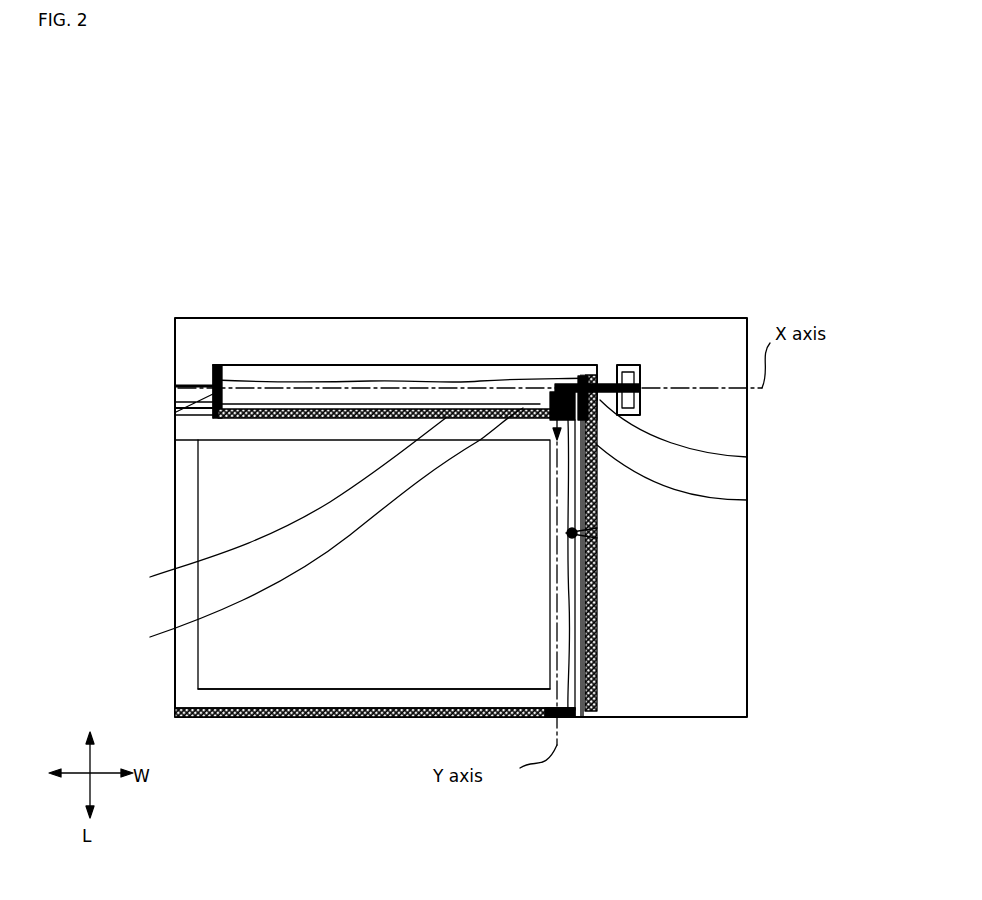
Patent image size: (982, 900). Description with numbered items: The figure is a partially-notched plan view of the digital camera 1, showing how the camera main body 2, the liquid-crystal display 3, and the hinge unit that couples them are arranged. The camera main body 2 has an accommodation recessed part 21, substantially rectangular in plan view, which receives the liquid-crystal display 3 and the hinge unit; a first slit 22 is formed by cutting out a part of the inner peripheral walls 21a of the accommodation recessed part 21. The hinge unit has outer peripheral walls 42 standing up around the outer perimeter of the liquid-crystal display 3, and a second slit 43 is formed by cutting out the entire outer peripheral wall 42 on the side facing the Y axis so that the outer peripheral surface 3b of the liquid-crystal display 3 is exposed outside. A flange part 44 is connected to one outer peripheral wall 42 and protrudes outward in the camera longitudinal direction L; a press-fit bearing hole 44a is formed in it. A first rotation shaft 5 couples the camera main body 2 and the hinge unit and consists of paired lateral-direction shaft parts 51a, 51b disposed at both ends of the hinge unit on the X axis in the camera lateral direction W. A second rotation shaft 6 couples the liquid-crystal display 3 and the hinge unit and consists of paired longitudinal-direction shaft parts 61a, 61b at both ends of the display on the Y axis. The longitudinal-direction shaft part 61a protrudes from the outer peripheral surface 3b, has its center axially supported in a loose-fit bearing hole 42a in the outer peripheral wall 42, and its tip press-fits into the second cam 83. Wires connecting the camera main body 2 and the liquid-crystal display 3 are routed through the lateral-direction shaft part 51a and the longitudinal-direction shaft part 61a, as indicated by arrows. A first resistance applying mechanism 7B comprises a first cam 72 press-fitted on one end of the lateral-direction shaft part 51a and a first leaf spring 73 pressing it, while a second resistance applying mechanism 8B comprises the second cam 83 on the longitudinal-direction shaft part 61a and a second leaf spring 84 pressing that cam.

The digital camera 1 is at (752, 278).
The camera main body 2 is at (738, 538).
The liquid-crystal display 3 is at (210, 668).
The outer peripheral surface 3b is at (380, 722).
The first rotation shaft 5 is at (95, 322).
The lateral-direction shaft part 51a is at (360, 380).
The lateral-direction shaft part 51b is at (178, 385).
The second rotation shaft 6 is at (712, 758).
The longitudinal-direction shaft part 61a is at (572, 540).
The longitudinal-direction shaft part 61b is at (565, 722).
The first resistance applying mechanism 7B is at (712, 252).
The first cam 72 is at (617, 365).
The first leaf spring 73 is at (635, 365).
The second resistance applying mechanism 8B is at (105, 574).
The second cam 83 is at (318, 528).
The second leaf spring 84 is at (280, 504).
The accommodation recessed part 21 is at (364, 382).
The inner peripheral walls 21a is at (396, 370).
The first slit 22 is at (306, 720).
The outer peripheral walls 42 is at (243, 420).
The loose-fit bearing hole 42a is at (692, 476).
The second slit 43 is at (172, 536).
The flange part 44 is at (217, 423).
The press-fit bearing hole 44a is at (177, 412).